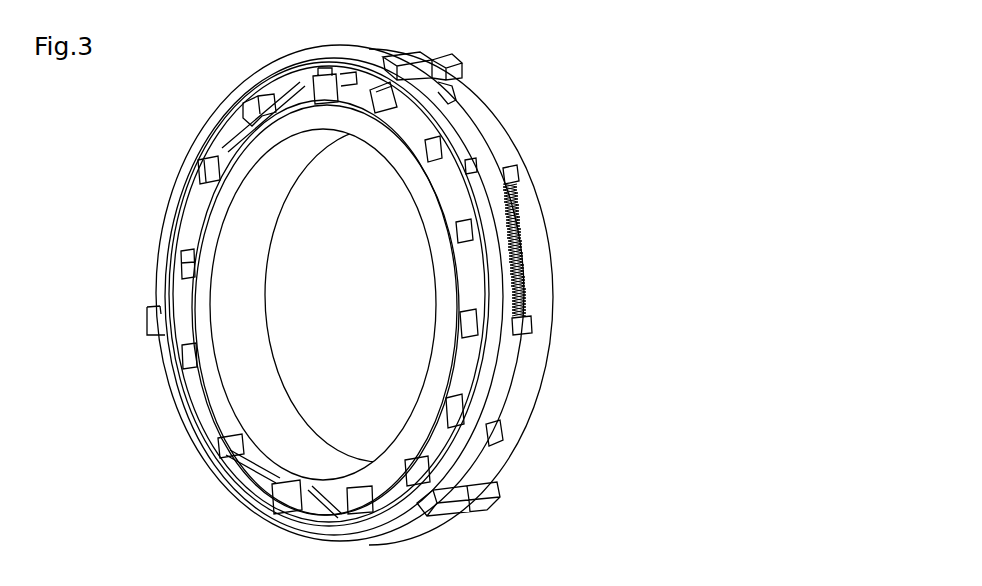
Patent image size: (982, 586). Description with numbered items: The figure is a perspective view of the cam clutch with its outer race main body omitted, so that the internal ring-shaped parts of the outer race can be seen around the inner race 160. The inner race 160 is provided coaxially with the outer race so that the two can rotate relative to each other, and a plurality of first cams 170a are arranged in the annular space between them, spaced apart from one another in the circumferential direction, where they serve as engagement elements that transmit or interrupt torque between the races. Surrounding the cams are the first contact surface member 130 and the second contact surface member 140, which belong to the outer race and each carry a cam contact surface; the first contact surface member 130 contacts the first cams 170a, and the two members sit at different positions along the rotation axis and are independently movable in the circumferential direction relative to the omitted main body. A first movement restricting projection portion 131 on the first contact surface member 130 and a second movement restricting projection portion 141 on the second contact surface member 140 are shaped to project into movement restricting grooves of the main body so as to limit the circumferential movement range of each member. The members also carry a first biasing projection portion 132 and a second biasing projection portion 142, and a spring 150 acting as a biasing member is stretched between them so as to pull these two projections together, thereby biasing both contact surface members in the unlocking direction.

The first contact surface member 130 is at (500, 375).
The first movement restricting projection portion 131 is at (400, 52).
The first biasing projection portion 132 is at (533, 322).
The second contact surface member 140 is at (520, 415).
The second movement restricting projection portion 141 is at (463, 58).
The second biasing projection portion 142 is at (520, 175).
The spring 150 is at (520, 230).
The inner race 160 is at (233, 160).
The first cams 170a is at (162, 340).